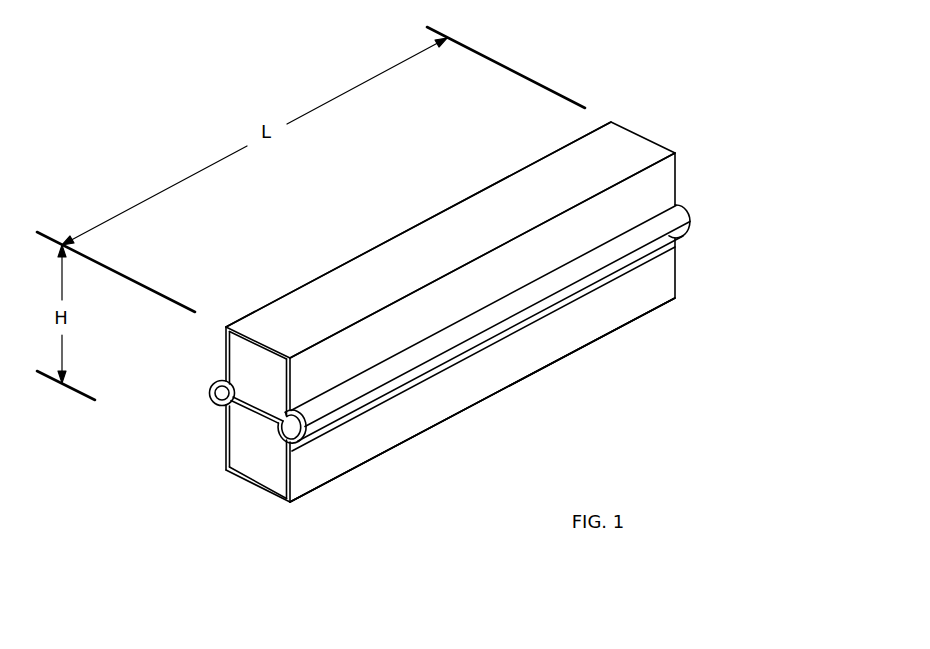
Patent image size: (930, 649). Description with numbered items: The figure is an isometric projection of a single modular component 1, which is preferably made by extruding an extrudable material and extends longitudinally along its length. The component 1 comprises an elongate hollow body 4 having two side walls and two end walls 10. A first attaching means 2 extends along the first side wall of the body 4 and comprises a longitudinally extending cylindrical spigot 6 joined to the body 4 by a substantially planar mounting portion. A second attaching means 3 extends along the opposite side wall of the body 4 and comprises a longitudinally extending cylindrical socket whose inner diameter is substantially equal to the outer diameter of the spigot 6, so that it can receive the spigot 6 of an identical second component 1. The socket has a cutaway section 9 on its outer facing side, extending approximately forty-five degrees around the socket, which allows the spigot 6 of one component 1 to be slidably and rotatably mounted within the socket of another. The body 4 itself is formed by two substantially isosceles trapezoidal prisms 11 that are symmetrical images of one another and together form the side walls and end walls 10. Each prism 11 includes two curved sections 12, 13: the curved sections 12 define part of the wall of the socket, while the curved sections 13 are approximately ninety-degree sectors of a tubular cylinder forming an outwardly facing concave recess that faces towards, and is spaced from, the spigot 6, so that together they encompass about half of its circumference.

The modular component 1 is at (588, 373).
The first attaching means 2 is at (214, 402).
The second attaching means 3 is at (623, 280).
The elongate hollow body 4 is at (375, 468).
The cylindrical spigot 6 is at (215, 384).
The cutaway section 9 is at (688, 230).
The end walls 10 is at (438, 237).
The isosceles trapezoidal prisms 11 is at (668, 192).
The curved sections 12 is at (293, 448).
The curved sections 13 is at (235, 412).